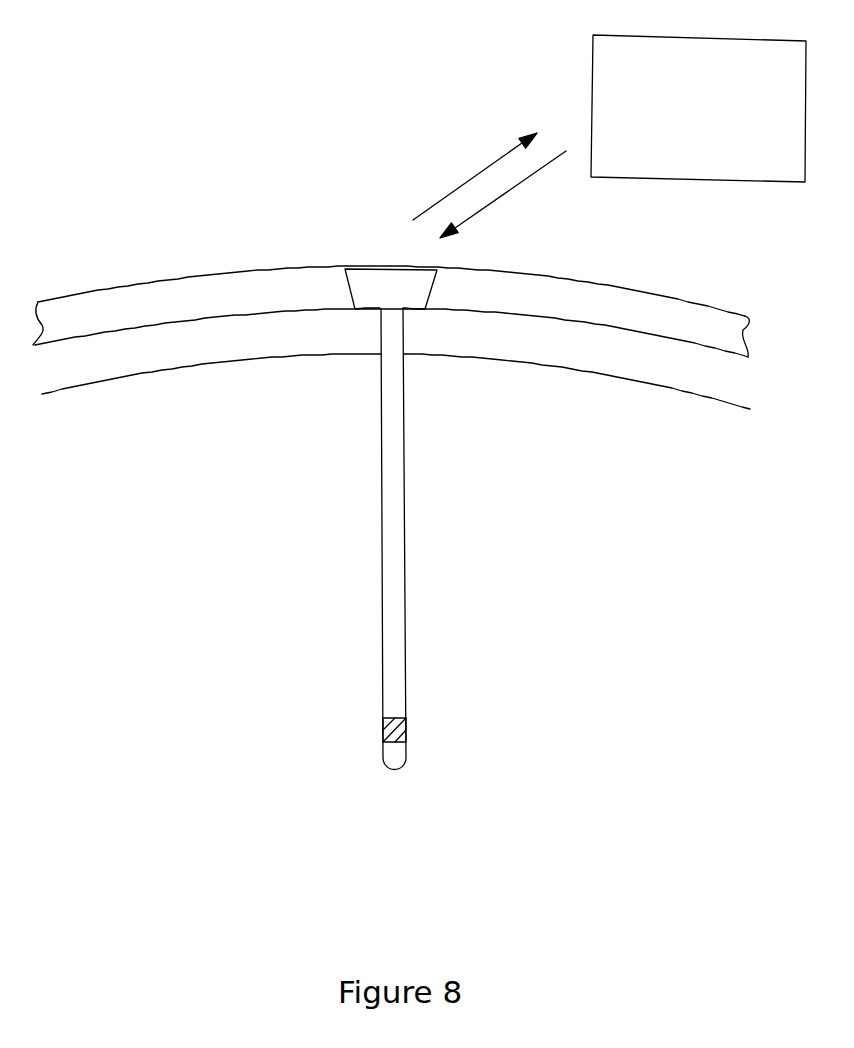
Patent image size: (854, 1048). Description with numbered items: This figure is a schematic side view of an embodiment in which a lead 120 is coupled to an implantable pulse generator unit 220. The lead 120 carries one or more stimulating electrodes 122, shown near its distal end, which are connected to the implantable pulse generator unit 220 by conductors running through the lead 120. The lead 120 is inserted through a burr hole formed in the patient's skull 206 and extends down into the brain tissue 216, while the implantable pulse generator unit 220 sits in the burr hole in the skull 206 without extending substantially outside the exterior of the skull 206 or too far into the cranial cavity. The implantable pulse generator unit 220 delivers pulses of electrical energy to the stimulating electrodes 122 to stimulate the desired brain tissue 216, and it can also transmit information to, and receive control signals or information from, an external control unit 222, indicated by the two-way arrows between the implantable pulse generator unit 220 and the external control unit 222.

The skull 206 is at (651, 293).
The brain tissue 216 is at (158, 370).
The implantable pulse generator unit 220 is at (393, 268).
The lead 120 is at (403, 412).
The stimulating electrode 122 is at (407, 725).
The external control unit 222 is at (593, 39).